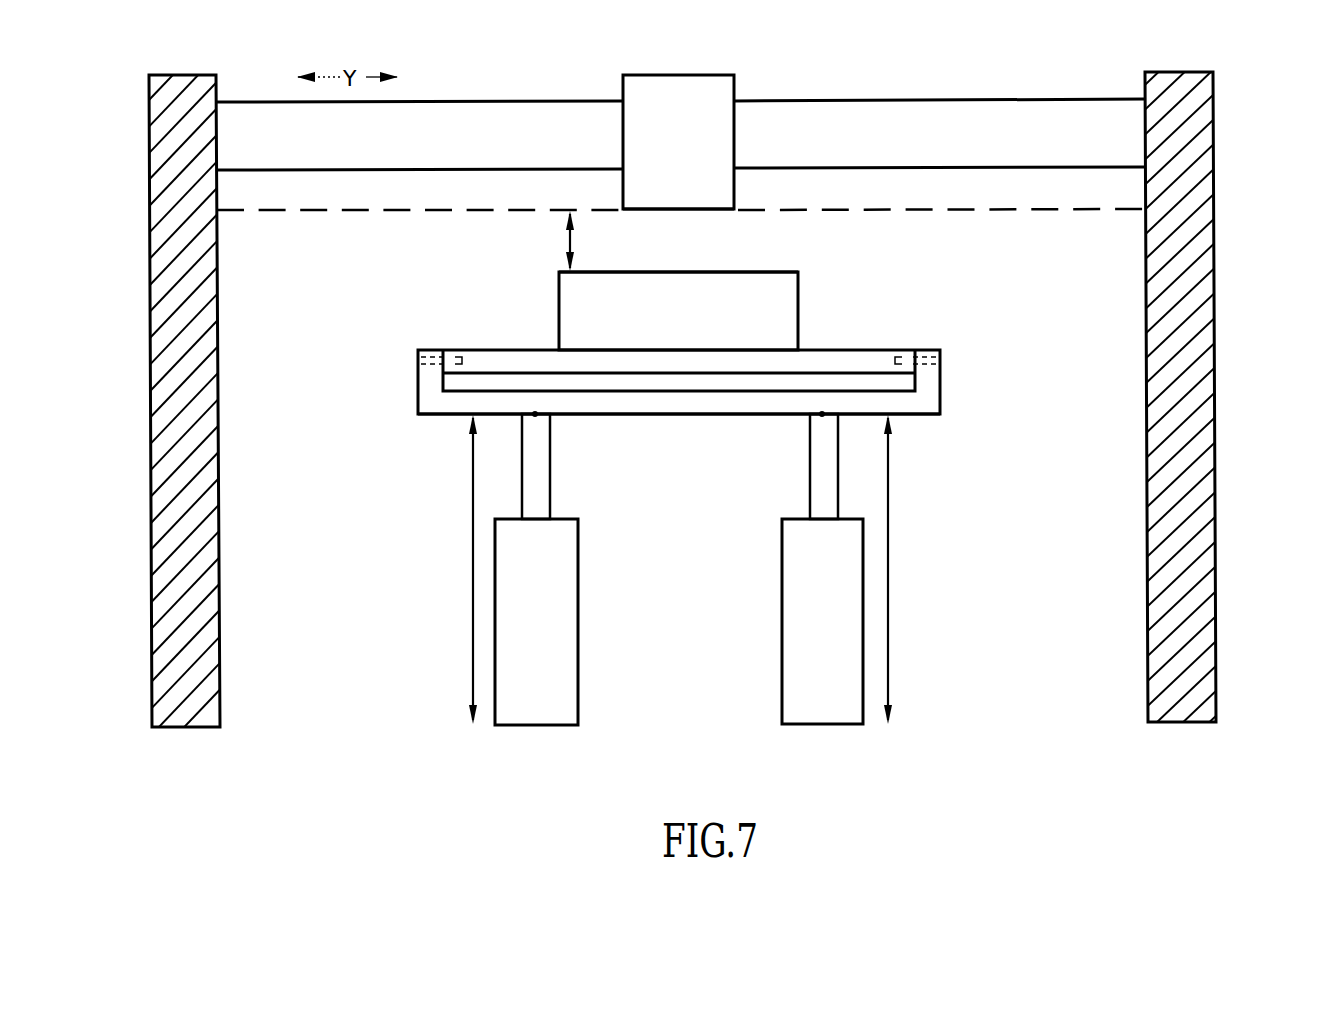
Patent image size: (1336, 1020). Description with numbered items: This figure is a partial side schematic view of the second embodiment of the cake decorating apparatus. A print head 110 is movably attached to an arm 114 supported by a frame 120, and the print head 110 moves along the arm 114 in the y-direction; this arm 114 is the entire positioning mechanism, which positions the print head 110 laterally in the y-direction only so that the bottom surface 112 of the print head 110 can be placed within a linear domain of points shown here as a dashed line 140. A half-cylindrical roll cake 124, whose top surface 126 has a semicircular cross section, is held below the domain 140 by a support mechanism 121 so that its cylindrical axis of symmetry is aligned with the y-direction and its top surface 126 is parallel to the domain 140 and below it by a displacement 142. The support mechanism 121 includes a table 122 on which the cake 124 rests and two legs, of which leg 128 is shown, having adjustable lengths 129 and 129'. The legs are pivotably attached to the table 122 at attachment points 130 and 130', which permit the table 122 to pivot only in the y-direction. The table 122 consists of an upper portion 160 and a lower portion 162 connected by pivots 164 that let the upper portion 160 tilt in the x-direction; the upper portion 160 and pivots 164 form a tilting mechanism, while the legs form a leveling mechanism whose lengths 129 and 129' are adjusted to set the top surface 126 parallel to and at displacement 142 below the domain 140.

The print head 110 is at (697, 145).
The bottom surface 112 is at (690, 210).
The arm 114 is at (938, 145).
The frame 120 is at (165, 378).
The support mechanism 121 is at (768, 582).
The table 122 is at (1005, 384).
The half-cylindrical roll cake 124 is at (688, 329).
The top surface 126 is at (711, 272).
The leg 128 is at (558, 618).
The adjustable length 129 is at (437, 569).
The adjustable length 129' is at (943, 569).
The attachment point 130 is at (576, 465).
The attachment point 130' is at (770, 465).
The linear domain of points 140 is at (955, 212).
The displacement 142 is at (568, 238).
The upper portion 160 is at (825, 357).
The lower portion 162 is at (897, 403).
The pivots 164 is at (428, 352).